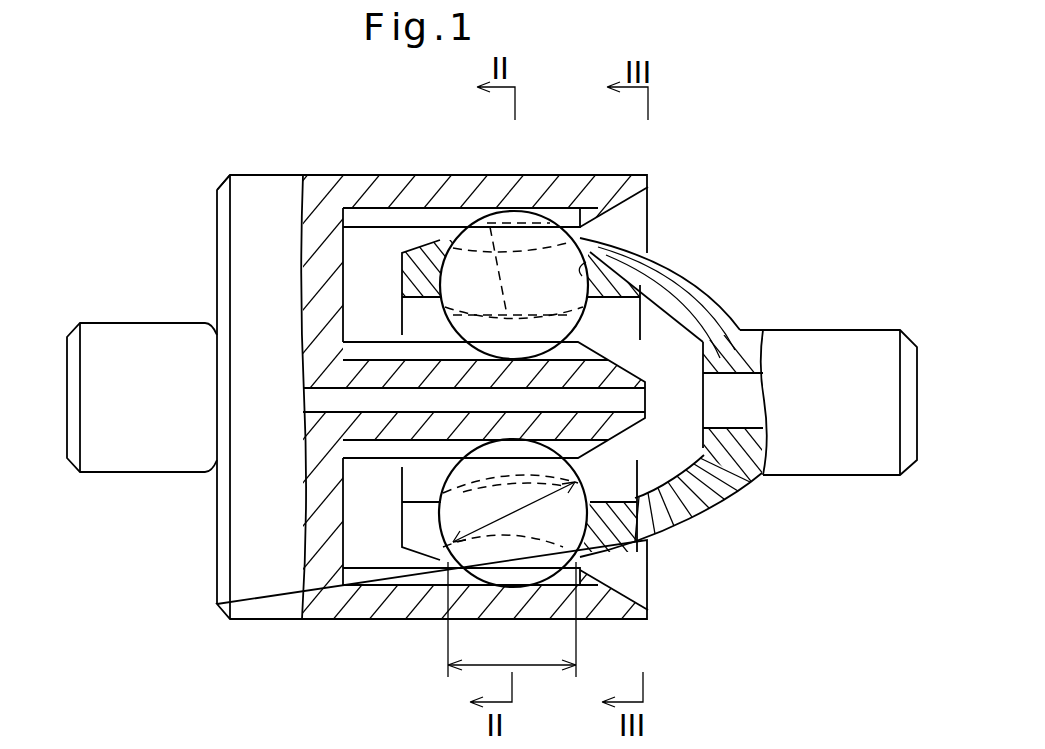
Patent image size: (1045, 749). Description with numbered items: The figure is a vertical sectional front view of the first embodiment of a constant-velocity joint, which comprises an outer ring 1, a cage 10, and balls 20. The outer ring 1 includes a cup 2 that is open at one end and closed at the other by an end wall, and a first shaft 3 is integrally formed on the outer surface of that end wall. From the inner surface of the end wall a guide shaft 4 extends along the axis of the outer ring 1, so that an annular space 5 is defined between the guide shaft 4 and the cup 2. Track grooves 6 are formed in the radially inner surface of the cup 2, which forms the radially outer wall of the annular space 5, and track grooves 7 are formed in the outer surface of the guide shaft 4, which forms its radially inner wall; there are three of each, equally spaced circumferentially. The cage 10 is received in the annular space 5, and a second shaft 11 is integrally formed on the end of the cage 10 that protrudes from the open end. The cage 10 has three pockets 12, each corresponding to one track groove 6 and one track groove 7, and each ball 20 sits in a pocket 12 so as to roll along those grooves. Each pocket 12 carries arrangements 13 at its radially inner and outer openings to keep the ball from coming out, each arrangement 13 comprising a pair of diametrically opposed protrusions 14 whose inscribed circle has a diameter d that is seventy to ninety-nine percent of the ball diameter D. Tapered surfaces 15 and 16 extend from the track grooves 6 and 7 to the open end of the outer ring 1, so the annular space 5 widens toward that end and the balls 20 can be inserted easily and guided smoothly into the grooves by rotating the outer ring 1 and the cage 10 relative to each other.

The outer ring 1 is at (222, 178).
The cup 2 is at (362, 187).
The first shaft 3 is at (100, 338).
The guide shaft 4 is at (385, 368).
The annular space 5 is at (355, 268).
The track grooves 6 is at (413, 218).
The track grooves 7 is at (375, 455).
The cage 10 is at (688, 276).
The second shaft 11 is at (833, 342).
The pockets 12 is at (580, 240).
The arrangements for preventing the ball from coming out 13 is at (592, 232).
The protrusions 14 is at (490, 212).
The tapered surface 15 is at (617, 594).
The tapered surface 16 is at (623, 438).
The balls 20 is at (518, 237).
The diameter of the balls D is at (514, 512).
The diameter of the inscribed circle of the protrusions d is at (512, 619).